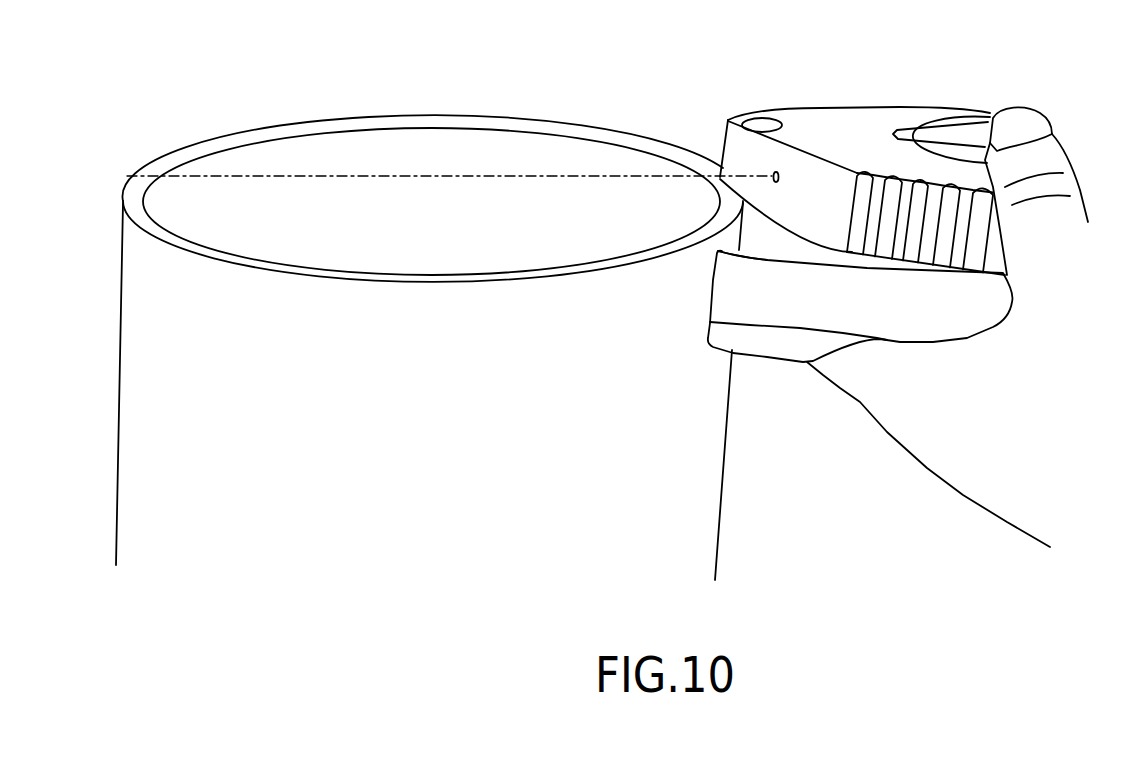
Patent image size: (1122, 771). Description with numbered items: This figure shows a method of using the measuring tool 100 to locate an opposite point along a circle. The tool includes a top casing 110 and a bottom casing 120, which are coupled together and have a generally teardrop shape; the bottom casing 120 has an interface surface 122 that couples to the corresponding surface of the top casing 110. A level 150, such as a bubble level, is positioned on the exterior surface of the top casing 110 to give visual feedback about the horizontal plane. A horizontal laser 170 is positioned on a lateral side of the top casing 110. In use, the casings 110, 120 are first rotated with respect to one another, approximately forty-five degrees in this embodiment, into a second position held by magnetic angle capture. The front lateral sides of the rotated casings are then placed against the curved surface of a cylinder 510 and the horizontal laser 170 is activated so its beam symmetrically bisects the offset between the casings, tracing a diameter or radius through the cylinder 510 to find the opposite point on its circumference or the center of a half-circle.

The measuring tool 100 is at (860, 201).
The top casing 110 is at (929, 135).
The bottom casing 120 is at (938, 311).
The interface surface 122 is at (762, 248).
The level 150 is at (760, 125).
The horizontal laser 170 is at (774, 176).
The cylinder 510 is at (398, 108).